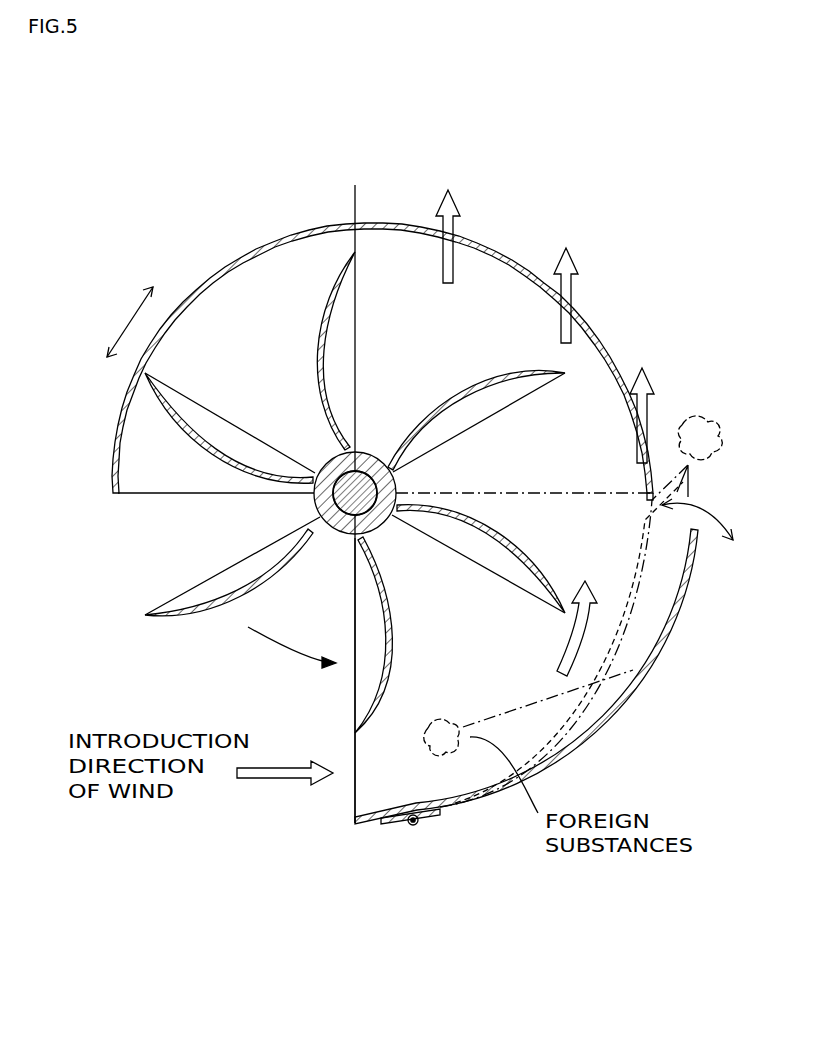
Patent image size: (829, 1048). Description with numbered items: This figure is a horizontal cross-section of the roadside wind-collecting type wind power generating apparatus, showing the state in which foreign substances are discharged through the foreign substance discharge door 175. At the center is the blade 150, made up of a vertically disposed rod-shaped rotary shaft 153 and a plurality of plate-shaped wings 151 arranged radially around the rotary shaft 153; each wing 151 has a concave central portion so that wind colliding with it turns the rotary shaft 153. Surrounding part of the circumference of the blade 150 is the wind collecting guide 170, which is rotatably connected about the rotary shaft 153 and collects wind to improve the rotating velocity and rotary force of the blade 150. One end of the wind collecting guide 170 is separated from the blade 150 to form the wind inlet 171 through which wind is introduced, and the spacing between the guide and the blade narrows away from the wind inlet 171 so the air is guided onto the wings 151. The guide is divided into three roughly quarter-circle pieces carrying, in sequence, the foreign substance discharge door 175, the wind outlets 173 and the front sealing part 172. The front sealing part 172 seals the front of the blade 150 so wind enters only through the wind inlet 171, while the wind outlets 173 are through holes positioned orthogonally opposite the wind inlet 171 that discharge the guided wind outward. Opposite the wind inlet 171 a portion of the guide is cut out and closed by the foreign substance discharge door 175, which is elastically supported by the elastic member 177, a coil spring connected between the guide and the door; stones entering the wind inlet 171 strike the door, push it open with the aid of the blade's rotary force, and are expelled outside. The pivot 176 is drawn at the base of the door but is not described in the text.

The blade 150 is at (298, 492).
The wings 151 is at (177, 427).
The rotary shaft 153 is at (327, 460).
The wind collecting guide 170 is at (420, 538).
The wind inlet 171 is at (360, 780).
The front sealing part 172 is at (248, 253).
The wind outlets 173 is at (460, 237).
The foreign substance discharge door 175 is at (634, 690).
The hinge 176 is at (416, 826).
The elastic member 177 is at (405, 826).